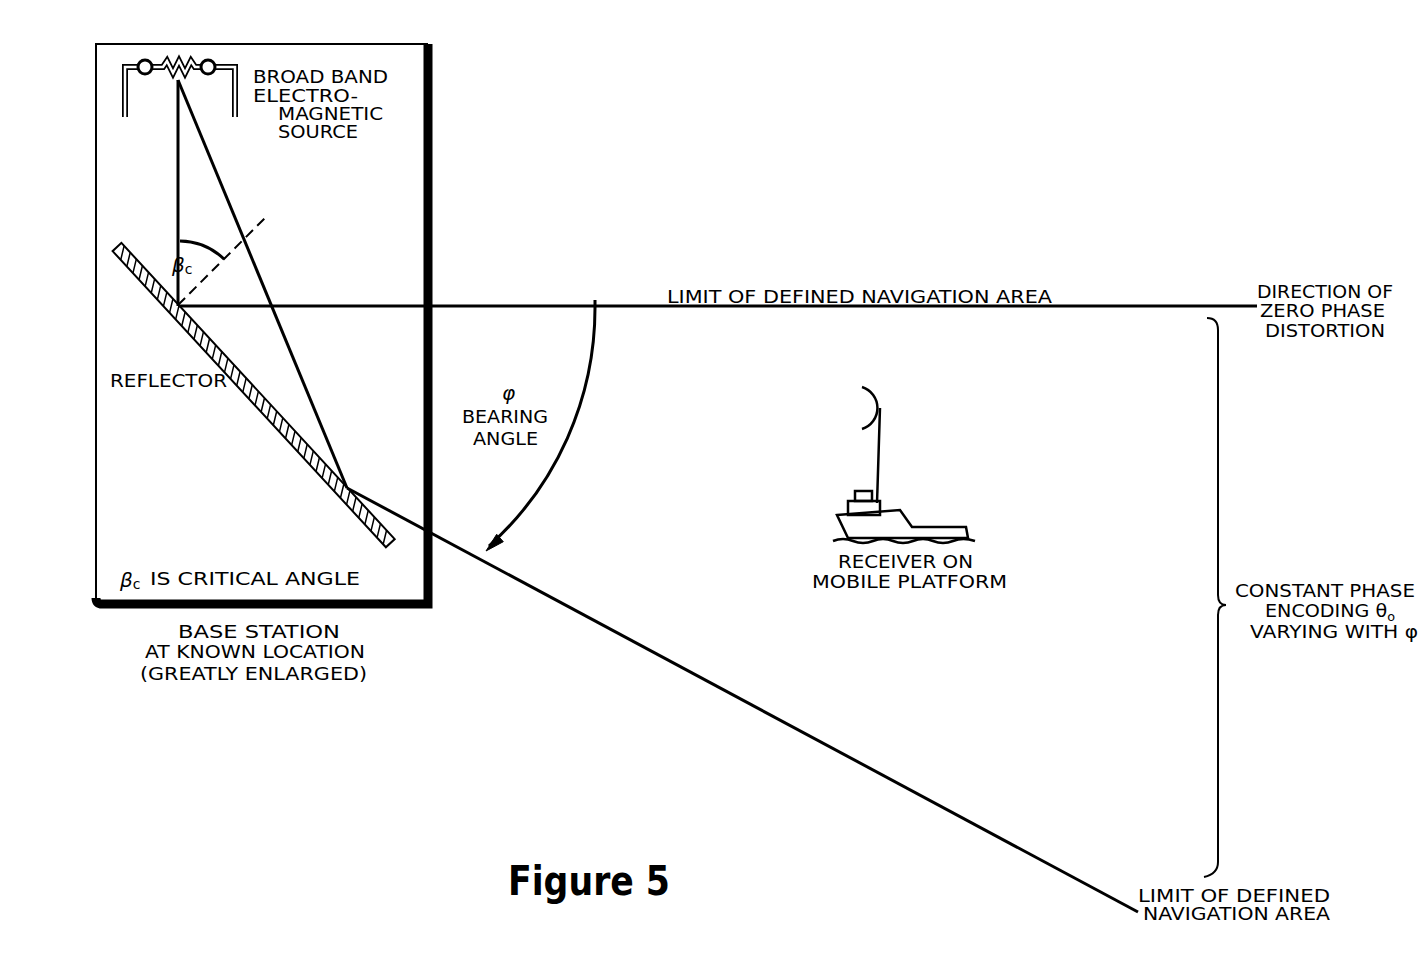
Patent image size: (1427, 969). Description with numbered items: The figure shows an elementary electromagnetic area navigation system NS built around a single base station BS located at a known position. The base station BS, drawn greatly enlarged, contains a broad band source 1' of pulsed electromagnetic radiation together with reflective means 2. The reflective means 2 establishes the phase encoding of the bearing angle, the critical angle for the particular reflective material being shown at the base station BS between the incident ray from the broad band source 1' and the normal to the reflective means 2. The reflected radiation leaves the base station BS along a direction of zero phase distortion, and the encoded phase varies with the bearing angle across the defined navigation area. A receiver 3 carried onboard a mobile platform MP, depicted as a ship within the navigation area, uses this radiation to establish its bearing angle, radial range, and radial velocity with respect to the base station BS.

The broad band source 1' is at (169, 82).
The reflective means 2 is at (200, 349).
The receiver 3 is at (884, 419).
The base station BS is at (433, 60).
The mobile platform MP is at (947, 525).
The area navigation system NS is at (839, 205).